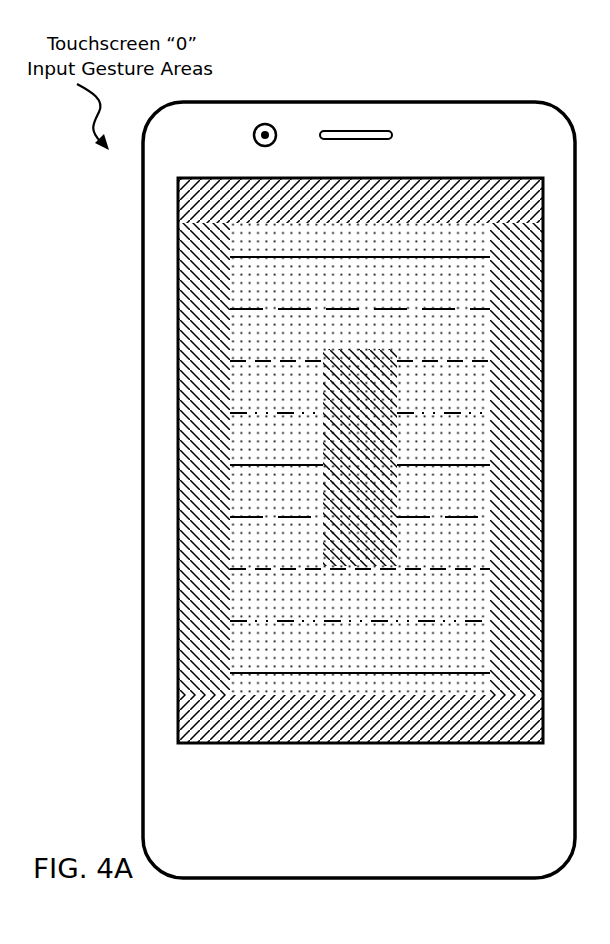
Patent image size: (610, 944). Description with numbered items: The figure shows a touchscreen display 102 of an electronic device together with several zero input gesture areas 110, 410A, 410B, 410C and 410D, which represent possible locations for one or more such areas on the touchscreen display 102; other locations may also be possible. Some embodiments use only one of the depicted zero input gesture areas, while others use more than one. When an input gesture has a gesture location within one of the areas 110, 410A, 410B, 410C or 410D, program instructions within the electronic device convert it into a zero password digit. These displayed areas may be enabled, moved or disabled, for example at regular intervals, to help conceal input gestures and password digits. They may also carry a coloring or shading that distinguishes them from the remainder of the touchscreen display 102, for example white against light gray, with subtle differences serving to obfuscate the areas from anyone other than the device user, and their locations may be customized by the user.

The touchscreen display 102 is at (178, 173).
The "0" input gesture area 110 is at (377, 209).
The "0" input gesture area 410A is at (226, 469).
The "0" input gesture area 410B is at (384, 469).
The "0" input gesture area 410C is at (540, 469).
The "0" input gesture area 410D is at (384, 726).